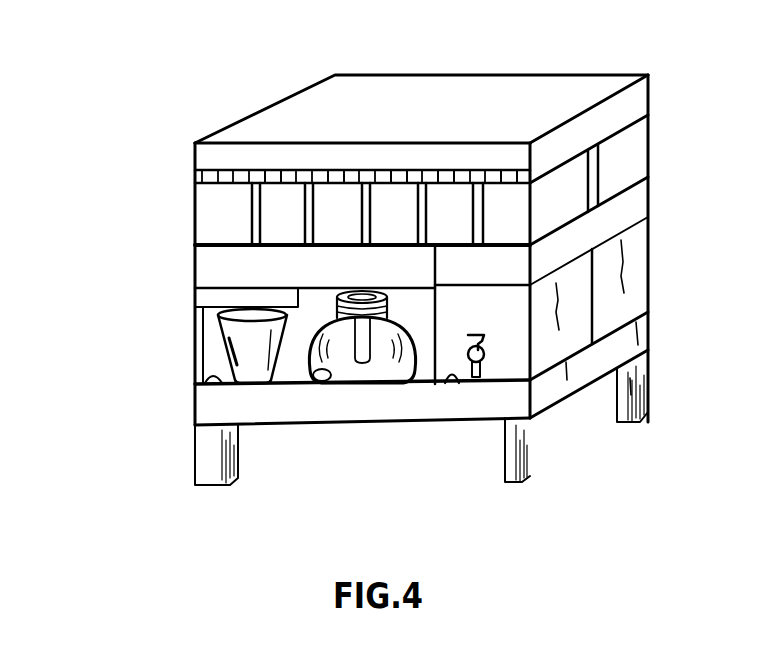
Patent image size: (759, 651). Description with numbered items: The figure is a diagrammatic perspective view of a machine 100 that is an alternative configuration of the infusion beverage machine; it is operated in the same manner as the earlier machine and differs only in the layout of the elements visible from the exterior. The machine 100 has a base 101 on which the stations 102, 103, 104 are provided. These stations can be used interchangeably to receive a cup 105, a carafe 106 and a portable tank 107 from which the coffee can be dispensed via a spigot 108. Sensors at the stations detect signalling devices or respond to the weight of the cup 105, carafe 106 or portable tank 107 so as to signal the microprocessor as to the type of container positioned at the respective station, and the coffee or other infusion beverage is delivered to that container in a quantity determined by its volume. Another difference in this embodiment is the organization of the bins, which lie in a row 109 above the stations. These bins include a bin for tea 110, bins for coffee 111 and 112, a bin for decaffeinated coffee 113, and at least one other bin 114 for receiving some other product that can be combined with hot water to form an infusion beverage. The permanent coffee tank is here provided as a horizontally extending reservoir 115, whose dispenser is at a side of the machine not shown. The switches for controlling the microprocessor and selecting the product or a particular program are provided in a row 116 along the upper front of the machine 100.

The machine 100 is at (664, 76).
The base 101 is at (650, 332).
The station 102 is at (205, 375).
The station 103 is at (310, 378).
The station 104 is at (450, 383).
The cup 105 is at (250, 347).
The carafe 106 is at (385, 368).
The portable tank 107 is at (503, 333).
The spigot 108 is at (483, 380).
The row of bins 109 is at (193, 238).
The bin for tea 110 is at (223, 193).
The bin for coffee 111 is at (285, 197).
The bin for coffee 112 is at (392, 192).
The bin for decaffeinated coffee 113 is at (340, 195).
The bin for other product 114 is at (555, 190).
The horizontally extending reservoir 115 is at (205, 283).
The row of switches 116 is at (508, 170).